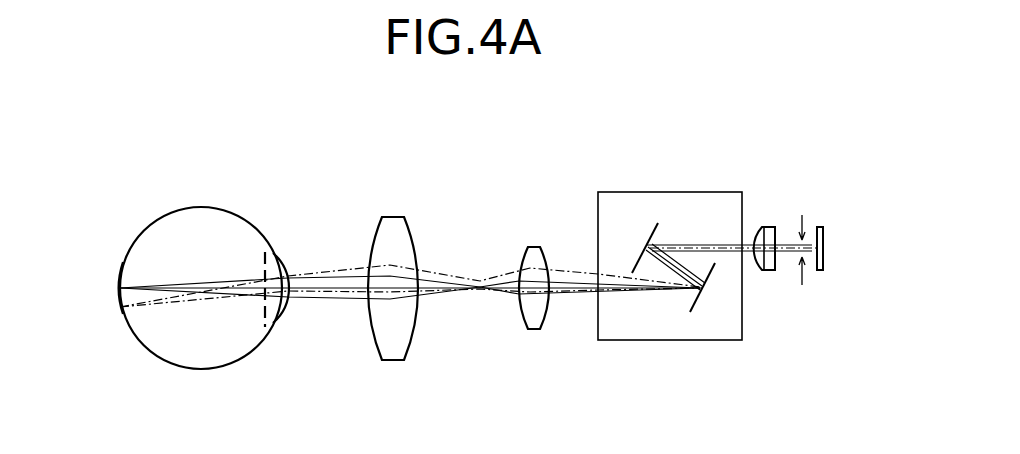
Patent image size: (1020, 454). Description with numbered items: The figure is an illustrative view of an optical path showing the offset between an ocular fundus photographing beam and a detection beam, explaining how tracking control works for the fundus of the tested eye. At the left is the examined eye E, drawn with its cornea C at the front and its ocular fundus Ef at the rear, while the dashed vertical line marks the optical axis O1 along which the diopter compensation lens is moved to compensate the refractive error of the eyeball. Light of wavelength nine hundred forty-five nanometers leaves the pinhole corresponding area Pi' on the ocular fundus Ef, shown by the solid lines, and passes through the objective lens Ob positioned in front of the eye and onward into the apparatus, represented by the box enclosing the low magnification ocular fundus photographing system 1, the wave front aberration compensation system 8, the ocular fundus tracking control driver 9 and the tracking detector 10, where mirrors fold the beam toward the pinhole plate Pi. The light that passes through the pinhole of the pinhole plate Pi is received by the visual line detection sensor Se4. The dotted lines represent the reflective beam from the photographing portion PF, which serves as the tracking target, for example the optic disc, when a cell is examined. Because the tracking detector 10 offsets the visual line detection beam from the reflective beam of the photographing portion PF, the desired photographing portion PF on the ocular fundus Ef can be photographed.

The examined eye E is at (215, 207).
The ocular fundus Ef is at (135, 233).
The cornea C is at (276, 262).
The optical axis O1 is at (300, 299).
The pinhole corresponding area Pi' is at (368, 281).
The photographing portion PF is at (120, 307).
The objective lens Ob is at (392, 217).
The low magnification ocular fundus photographing system 1 is at (707, 228).
The wave front aberration compensation system 8 is at (707, 228).
The ocular fundus tracking control driver 9 is at (707, 228).
The tracking detector 10 is at (650, 192).
The pinhole plate Pi is at (818, 215).
The visual line detection sensor Se4 is at (824, 229).